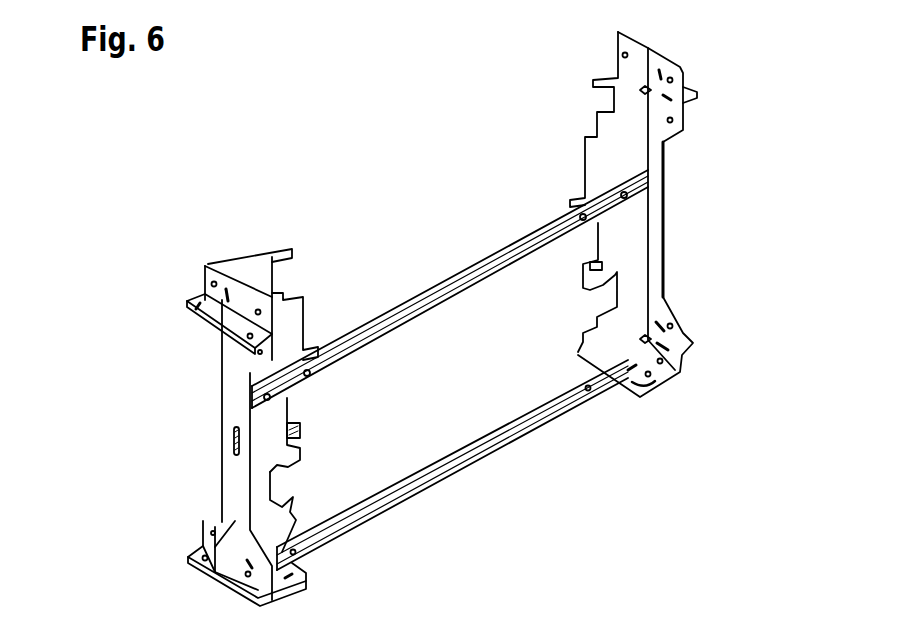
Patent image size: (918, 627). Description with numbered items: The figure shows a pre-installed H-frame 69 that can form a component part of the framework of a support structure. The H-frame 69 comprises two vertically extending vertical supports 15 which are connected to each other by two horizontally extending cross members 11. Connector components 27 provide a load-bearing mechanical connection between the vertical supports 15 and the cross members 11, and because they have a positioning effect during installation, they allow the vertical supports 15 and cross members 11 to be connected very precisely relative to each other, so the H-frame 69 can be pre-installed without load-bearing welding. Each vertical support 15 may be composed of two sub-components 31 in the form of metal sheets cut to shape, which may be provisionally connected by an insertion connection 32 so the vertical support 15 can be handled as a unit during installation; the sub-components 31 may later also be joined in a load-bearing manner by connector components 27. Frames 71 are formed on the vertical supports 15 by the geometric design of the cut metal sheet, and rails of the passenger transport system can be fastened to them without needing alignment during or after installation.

The H-frame 69 is at (445, 212).
The vertical support 15 is at (665, 218).
The cross member 11 is at (419, 296).
The sub-component 31 is at (290, 333).
The insertion connection 32 is at (233, 442).
The frame 71 is at (297, 493).
The connector component 27 is at (272, 398).